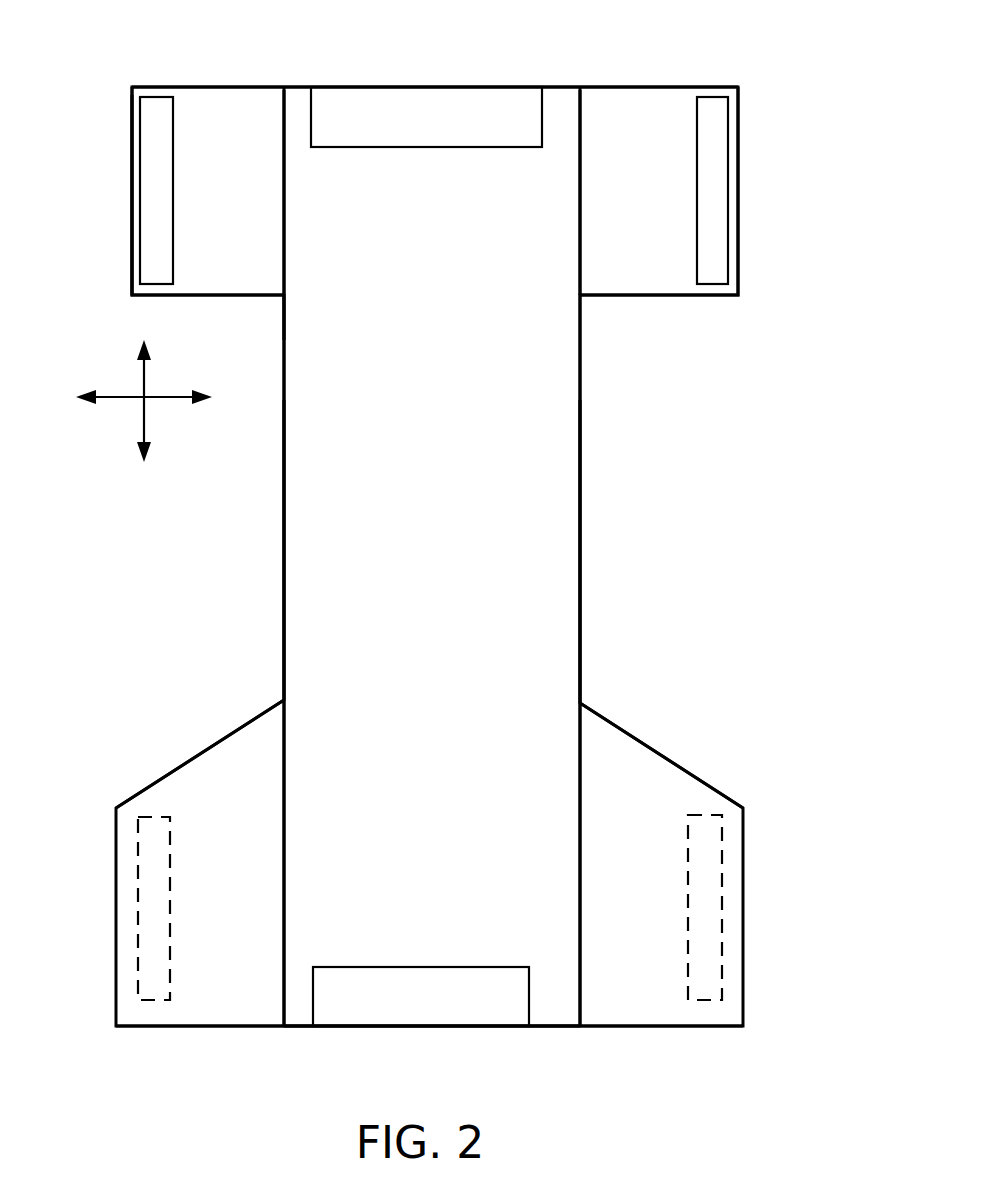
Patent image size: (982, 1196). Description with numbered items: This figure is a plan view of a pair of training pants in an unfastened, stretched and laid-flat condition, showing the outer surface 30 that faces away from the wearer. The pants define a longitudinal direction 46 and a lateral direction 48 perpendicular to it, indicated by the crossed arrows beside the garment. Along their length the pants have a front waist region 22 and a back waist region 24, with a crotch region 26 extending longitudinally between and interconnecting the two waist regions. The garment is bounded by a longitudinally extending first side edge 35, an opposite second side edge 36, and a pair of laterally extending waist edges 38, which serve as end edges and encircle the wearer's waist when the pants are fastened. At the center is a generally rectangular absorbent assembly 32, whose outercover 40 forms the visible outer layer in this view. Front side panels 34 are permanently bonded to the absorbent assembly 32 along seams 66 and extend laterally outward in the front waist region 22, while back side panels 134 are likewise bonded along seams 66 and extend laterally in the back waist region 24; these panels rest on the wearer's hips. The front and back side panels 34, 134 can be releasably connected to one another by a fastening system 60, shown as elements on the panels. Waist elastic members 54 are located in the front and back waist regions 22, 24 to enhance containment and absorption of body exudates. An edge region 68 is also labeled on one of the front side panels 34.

The front waist region 22 is at (757, 289).
The back waist region 24 is at (320, 842).
The crotch region 26 is at (520, 470).
The outer surface 30 is at (557, 523).
The absorbent assembly 32 is at (525, 697).
The front side panels 34 is at (198, 175).
The first side edge 35 is at (580, 596).
The second side edge 36 is at (284, 447).
The waist edges 38 is at (390, 87).
The outercover 40 is at (310, 323).
The longitudinal direction 46 is at (140, 382).
The lateral direction 48 is at (165, 395).
The waist elastic members 54 is at (475, 105).
The fastening system 60 is at (142, 133).
The seams 66 is at (284, 224).
The ear free end edge 68 is at (130, 262).
The back side panels 134 is at (203, 770).